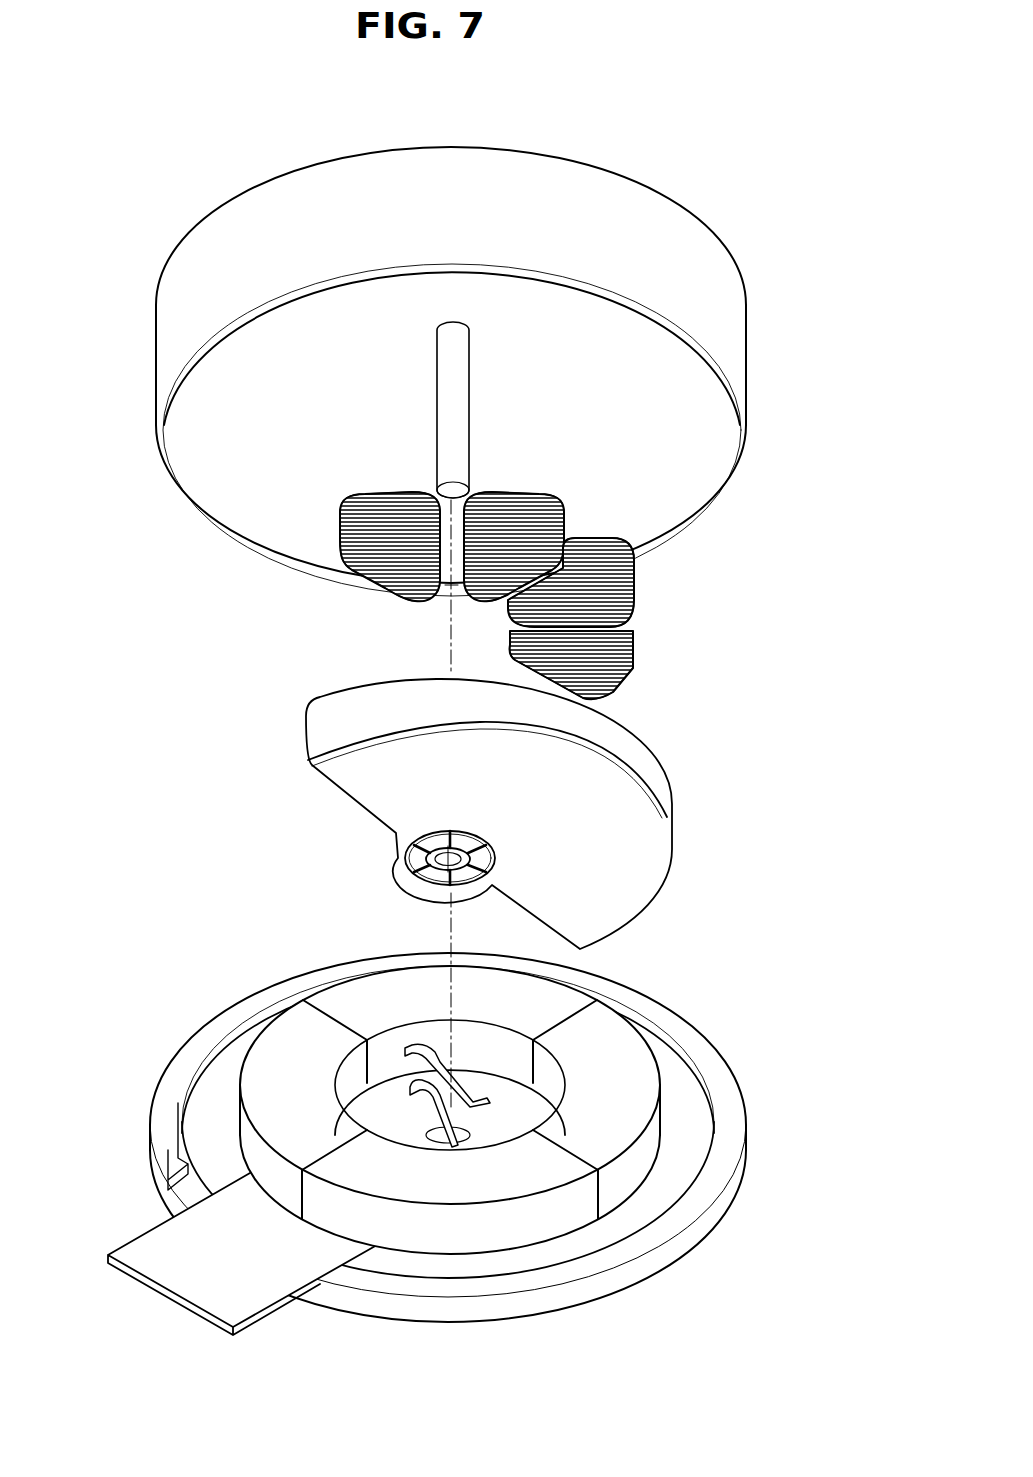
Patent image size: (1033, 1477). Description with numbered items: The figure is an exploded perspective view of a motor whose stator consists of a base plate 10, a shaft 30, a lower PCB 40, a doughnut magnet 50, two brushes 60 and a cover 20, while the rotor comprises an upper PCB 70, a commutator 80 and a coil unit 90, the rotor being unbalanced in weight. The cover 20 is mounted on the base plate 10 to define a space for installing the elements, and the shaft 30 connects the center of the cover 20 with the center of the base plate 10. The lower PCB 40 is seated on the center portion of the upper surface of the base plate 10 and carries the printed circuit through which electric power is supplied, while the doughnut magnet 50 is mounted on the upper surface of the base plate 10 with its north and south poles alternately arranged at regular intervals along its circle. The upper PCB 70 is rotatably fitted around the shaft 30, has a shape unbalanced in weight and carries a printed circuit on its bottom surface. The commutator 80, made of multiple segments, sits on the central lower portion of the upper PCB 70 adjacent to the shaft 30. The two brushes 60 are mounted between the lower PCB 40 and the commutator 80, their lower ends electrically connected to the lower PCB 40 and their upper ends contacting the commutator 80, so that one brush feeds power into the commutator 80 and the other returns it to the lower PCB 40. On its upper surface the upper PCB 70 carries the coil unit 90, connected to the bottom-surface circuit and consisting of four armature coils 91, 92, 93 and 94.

The base plate 10 is at (732, 1118).
The cover 20 is at (722, 278).
The shaft 30 is at (447, 396).
The lower PCB 40 is at (168, 1250).
The doughnut magnet 50 is at (580, 1070).
The brushes 60 is at (427, 1050).
The upper PCB 70 is at (632, 829).
The commutator 80 is at (404, 858).
The coil unit 90 is at (581, 545).
The armature coil 91 is at (380, 522).
The armature coil 92 is at (525, 515).
The armature coil 93 is at (636, 582).
The armature coil 94 is at (630, 665).